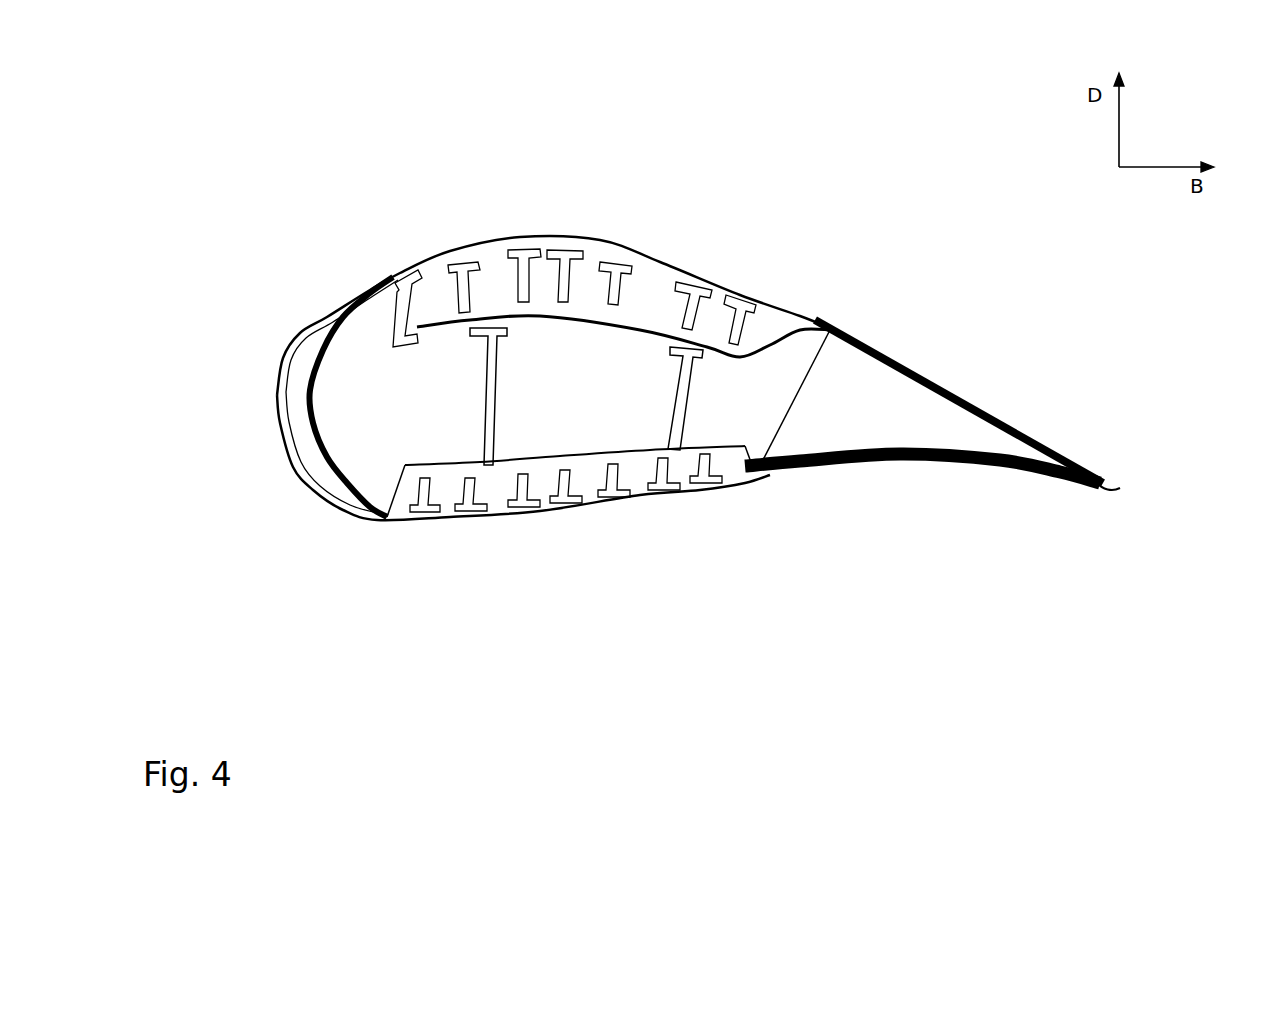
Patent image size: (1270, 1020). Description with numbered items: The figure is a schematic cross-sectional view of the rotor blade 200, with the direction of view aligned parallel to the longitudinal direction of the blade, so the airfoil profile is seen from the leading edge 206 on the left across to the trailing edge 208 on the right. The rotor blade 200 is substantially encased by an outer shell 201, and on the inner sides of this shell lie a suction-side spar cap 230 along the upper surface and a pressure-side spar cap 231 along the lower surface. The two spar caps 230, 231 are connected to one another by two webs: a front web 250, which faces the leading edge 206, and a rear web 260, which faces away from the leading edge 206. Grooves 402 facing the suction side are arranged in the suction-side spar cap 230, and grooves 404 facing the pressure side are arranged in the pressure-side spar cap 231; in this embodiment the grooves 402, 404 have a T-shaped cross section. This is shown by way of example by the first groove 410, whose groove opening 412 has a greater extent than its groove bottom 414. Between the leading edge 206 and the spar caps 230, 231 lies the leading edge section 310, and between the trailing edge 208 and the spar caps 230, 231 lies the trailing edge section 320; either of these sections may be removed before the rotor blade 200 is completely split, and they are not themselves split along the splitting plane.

The rotor blade 200 is at (302, 151).
The outer shell 201 is at (785, 306).
The leading edge 206 is at (277, 400).
The trailing edge 208 is at (1115, 491).
The suction-side spar cap 230 is at (650, 293).
The pressure-side spar cap 231 is at (640, 478).
The front web 250 is at (480, 457).
The rear web 260 is at (680, 407).
The leading edge section 310 is at (307, 489).
The trailing edge section 320 is at (990, 398).
The grooves 402 is at (513, 241).
The grooves 404 is at (568, 510).
The first groove 410 is at (395, 266).
The groove opening 412 is at (397, 275).
The groove bottom 414 is at (407, 322).